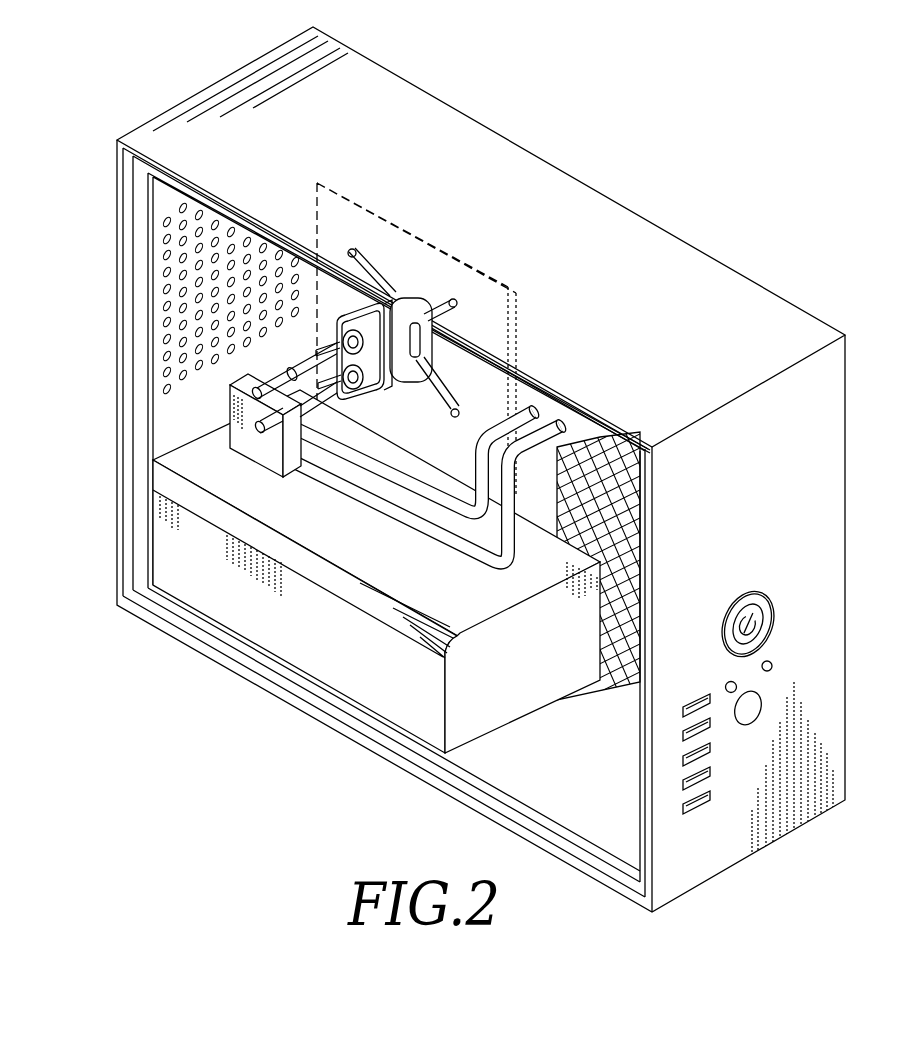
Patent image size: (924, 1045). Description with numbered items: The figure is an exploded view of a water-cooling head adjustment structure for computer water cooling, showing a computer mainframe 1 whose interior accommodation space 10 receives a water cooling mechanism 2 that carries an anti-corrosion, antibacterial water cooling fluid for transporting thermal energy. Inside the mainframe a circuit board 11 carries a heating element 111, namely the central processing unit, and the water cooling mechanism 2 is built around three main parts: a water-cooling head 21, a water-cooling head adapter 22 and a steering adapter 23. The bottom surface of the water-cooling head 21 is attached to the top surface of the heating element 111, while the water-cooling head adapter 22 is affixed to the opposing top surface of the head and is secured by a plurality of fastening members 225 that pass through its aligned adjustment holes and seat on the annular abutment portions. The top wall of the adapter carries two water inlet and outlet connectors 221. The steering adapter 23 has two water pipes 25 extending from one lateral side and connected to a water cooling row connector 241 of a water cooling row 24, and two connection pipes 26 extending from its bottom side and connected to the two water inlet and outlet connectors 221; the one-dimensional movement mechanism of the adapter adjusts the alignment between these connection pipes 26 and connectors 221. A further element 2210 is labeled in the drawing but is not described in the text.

The computer mainframe 1 is at (826, 712).
The accommodation space 10 is at (553, 738).
The circuit board 11 is at (511, 313).
The heating element 111 is at (510, 287).
The water cooling mechanism 2 is at (470, 434).
The water-cooling head 21 is at (430, 350).
The water-cooling head adapter 22 is at (404, 220).
The water inlet and outlet connectors 221 is at (337, 315).
The liquid ports 2210 is at (338, 385).
The fastening members 225 is at (516, 486).
The steering adapter 23 is at (263, 450).
The water cooling row 24 is at (622, 470).
The water cooling row connector 241 is at (547, 415).
The water pipes 25 is at (338, 398).
The connection pipes 26 is at (320, 362).